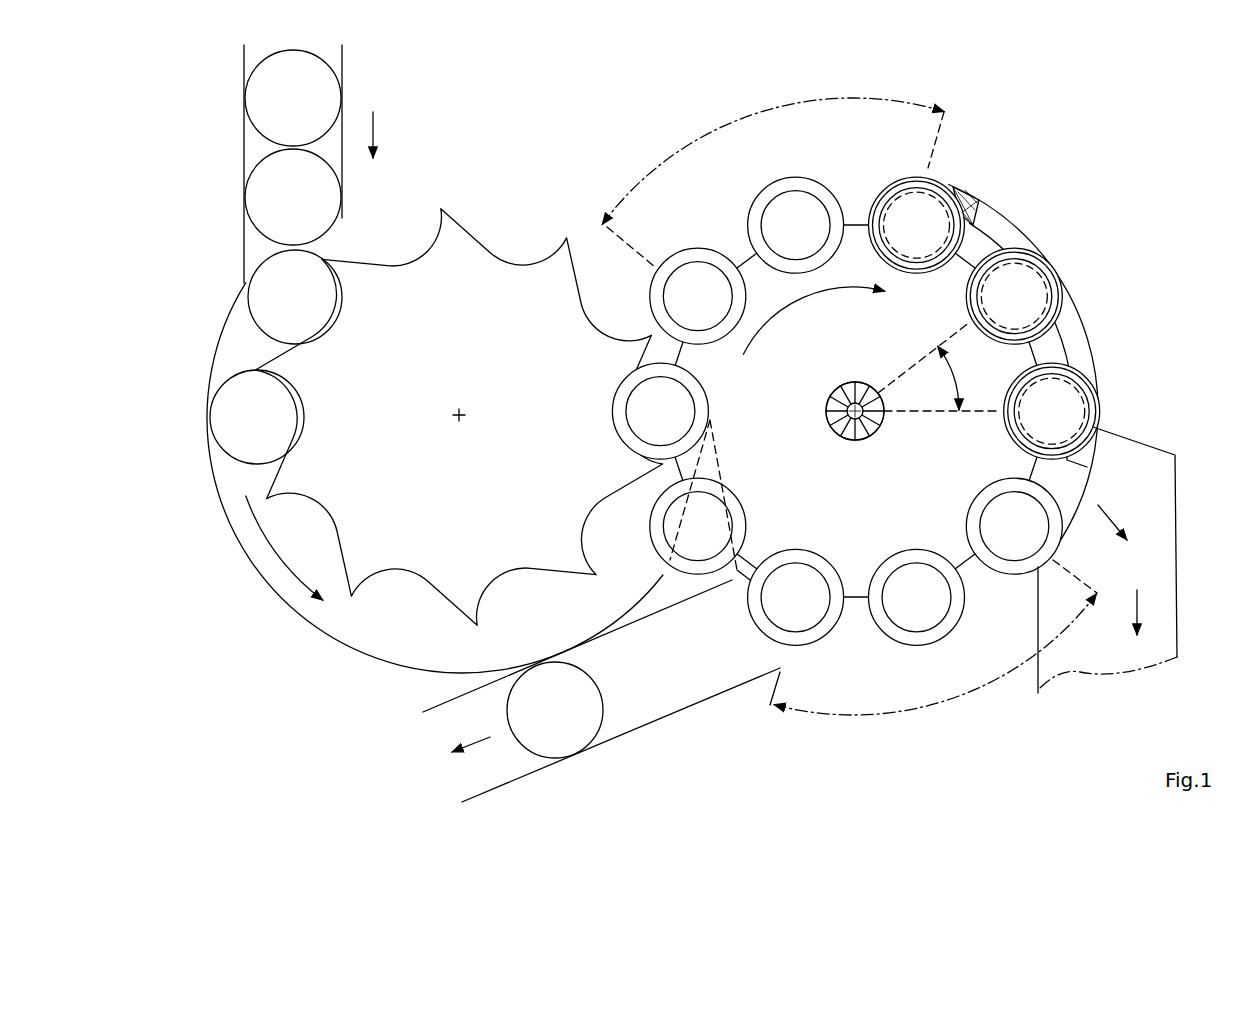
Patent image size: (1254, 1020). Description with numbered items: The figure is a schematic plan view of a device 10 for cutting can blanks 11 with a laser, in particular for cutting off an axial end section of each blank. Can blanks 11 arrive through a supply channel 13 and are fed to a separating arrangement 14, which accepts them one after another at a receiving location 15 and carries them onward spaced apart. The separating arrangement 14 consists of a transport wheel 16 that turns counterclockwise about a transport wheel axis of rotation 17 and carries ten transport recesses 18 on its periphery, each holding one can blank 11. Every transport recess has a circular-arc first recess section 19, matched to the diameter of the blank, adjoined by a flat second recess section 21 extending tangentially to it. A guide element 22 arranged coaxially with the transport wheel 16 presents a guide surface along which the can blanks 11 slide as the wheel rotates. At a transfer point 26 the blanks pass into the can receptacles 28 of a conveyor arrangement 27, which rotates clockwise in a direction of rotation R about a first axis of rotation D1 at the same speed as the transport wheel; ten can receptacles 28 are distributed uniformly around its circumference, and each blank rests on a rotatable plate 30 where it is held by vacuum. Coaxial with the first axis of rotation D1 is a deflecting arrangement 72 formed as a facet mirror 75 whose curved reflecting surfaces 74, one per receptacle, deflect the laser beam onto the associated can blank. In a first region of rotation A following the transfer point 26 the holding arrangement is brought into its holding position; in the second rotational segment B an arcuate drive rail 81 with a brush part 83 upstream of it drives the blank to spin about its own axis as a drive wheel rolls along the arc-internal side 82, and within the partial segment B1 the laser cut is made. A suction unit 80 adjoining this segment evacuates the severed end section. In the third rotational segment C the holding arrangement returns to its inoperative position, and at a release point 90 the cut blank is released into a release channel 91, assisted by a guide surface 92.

The device 10 is at (1096, 136).
The can blank 11 is at (245, 118).
The supply channel 13 is at (250, 63).
The separating arrangement 14 is at (475, 162).
The receiving location 15 is at (232, 265).
The transport wheel 16 is at (493, 288).
The transport wheel axis of rotation 17 is at (457, 413).
The transport recesses 18 is at (422, 258).
The first recess section 19 is at (337, 278).
The second recess section 21 is at (272, 360).
The guide element 22 is at (238, 553).
The transfer point 26 is at (618, 449).
The conveyor arrangement 27 is at (1125, 295).
The can receptacles 28 is at (641, 405).
The plate 30 is at (681, 407).
The deflecting arrangement 72 is at (850, 420).
The facet mirror 75 is at (855, 411).
The reflecting surfaces 74 is at (838, 398).
The suction unit 80 is at (1160, 516).
The drive rail 81 is at (1007, 218).
The arc-internal side 82 is at (965, 260).
The brush part 83 is at (975, 198).
The release point 90 is at (765, 650).
The release channel 91 is at (652, 692).
The guide surface 92 is at (728, 590).
The first region of rotation A is at (738, 120).
The second rotational segment B is at (1115, 325).
The partial segment B1 is at (957, 376).
The third rotational segment C is at (943, 708).
The first axis of rotation D1 is at (855, 420).
The direction of rotation R is at (813, 320).